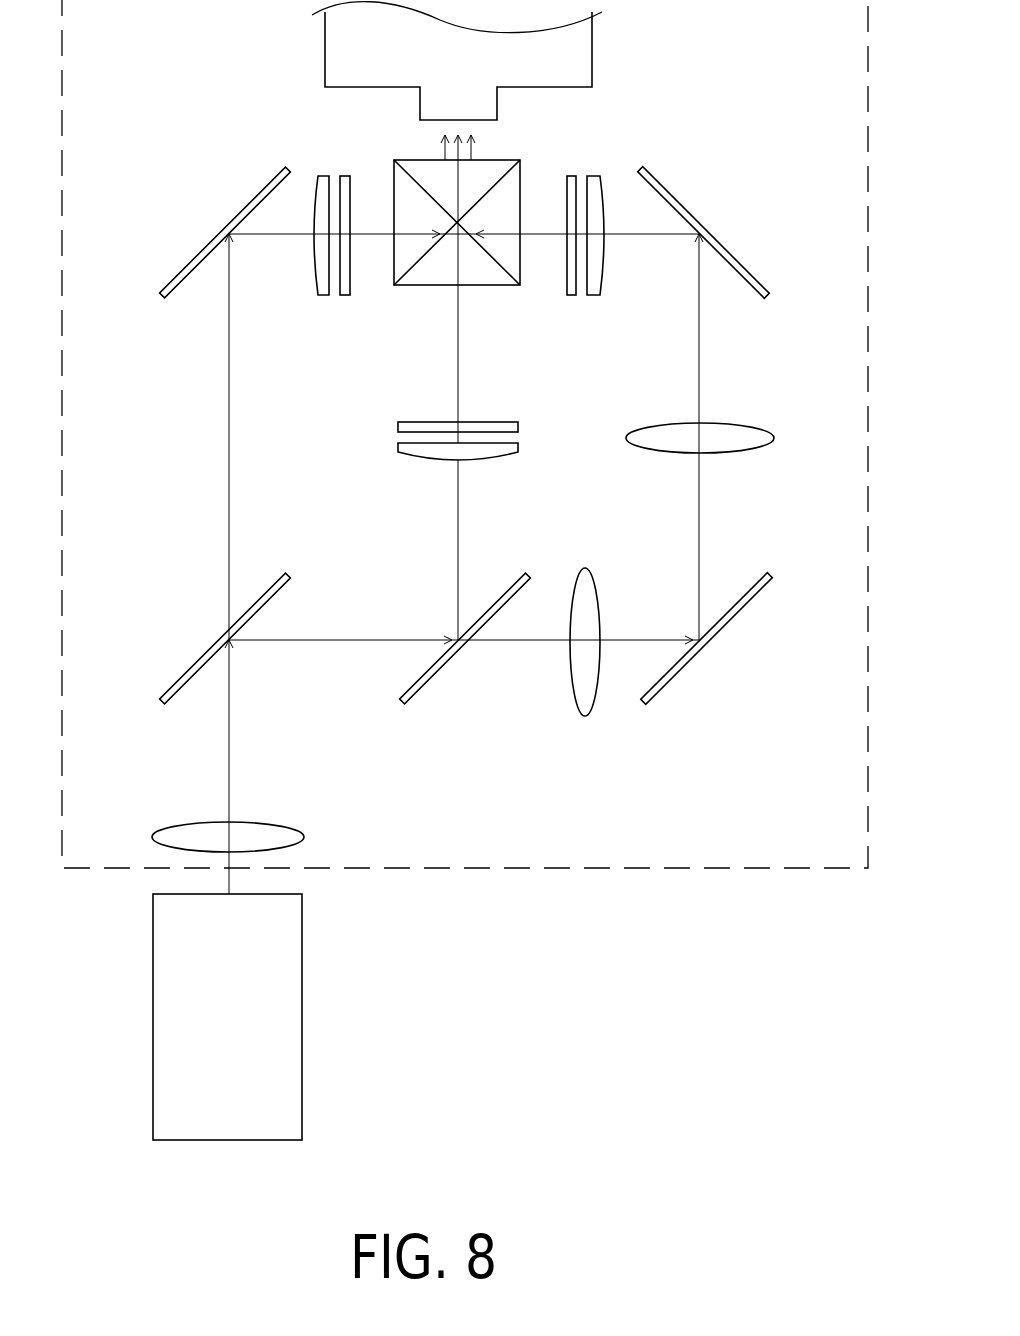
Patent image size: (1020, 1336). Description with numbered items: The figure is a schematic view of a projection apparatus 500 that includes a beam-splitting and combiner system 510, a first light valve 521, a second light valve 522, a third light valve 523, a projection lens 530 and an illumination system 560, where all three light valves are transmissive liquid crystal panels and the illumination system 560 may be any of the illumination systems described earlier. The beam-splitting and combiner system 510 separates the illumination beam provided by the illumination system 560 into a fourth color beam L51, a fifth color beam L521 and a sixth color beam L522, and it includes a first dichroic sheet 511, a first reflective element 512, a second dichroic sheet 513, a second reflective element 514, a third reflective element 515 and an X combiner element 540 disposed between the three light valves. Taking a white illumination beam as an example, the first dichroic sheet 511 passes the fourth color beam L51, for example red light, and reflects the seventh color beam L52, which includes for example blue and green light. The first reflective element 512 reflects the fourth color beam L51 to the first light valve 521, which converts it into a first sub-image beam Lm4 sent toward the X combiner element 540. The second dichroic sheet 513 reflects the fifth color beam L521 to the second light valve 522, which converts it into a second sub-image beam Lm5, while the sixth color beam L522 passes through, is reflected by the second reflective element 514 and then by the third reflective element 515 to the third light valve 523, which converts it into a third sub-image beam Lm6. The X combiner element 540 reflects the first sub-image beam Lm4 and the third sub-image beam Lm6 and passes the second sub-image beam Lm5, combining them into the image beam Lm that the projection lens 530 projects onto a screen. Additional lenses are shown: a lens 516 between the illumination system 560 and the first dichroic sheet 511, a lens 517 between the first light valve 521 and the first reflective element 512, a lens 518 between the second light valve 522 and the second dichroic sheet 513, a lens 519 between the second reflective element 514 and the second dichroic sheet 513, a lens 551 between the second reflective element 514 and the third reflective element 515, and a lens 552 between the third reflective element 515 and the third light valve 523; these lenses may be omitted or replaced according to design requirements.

The projection apparatus 500 is at (822, 1052).
The beam-splitting and combiner system 510 is at (565, 868).
The first dichroic sheet 511 is at (180, 686).
The first reflective element 512 is at (178, 283).
The second dichroic sheet 513 is at (418, 690).
The second reflective element 514 is at (755, 600).
The third reflective element 515 is at (653, 182).
The lens 516 is at (300, 840).
The lens 517 is at (312, 274).
The lens 518 is at (402, 452).
The lens 519 is at (590, 600).
The first light valve 521 is at (347, 176).
The second light valve 522 is at (445, 422).
The third light valve 523 is at (573, 178).
The projection lens 530 is at (565, 45).
The X combiner element 540 is at (428, 277).
The lens 551 is at (762, 440).
The lens 552 is at (596, 280).
The illumination system 560 is at (175, 1022).
The fourth color beam L51 is at (228, 440).
The seventh color beam L52 is at (328, 642).
The fifth color beam L521 is at (462, 520).
The sixth color beam L522 is at (518, 645).
The image beam Lm is at (414, 152).
The first sub-image beam Lm4 is at (373, 236).
The second sub-image beam Lm5 is at (462, 378).
The third sub-image beam Lm6 is at (545, 236).